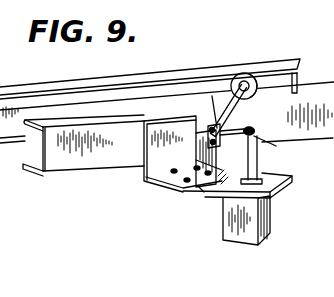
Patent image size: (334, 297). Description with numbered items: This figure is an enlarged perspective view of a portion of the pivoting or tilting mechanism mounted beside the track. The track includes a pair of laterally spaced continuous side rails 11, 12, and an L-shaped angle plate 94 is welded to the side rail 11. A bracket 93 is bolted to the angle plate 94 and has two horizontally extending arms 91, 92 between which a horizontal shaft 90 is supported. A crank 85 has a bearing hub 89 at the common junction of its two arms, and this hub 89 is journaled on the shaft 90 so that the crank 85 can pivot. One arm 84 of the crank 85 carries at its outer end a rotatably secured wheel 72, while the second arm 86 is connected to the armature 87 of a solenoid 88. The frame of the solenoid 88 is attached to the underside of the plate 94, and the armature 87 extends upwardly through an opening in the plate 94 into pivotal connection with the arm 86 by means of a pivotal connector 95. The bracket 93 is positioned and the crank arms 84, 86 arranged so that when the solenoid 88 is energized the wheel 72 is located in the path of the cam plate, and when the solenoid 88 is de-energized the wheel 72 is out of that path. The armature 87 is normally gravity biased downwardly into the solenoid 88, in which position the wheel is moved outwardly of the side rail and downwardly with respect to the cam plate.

The side rail 11 is at (60, 82).
The side rail 12 is at (100, 165).
The wheel 72 is at (245, 73).
The arm 84 is at (238, 107).
The crank 85 is at (212, 96).
The second arm 86 is at (238, 178).
The armature 87 is at (259, 164).
The solenoid 88 is at (270, 216).
The bearing hub 89 is at (208, 128).
The horizontal shaft 90 is at (156, 163).
The arm 91 is at (207, 187).
The arm 92 is at (255, 128).
The bracket 93 is at (200, 191).
The angle plate 94 is at (285, 186).
The pivotal connector 95 is at (276, 146).